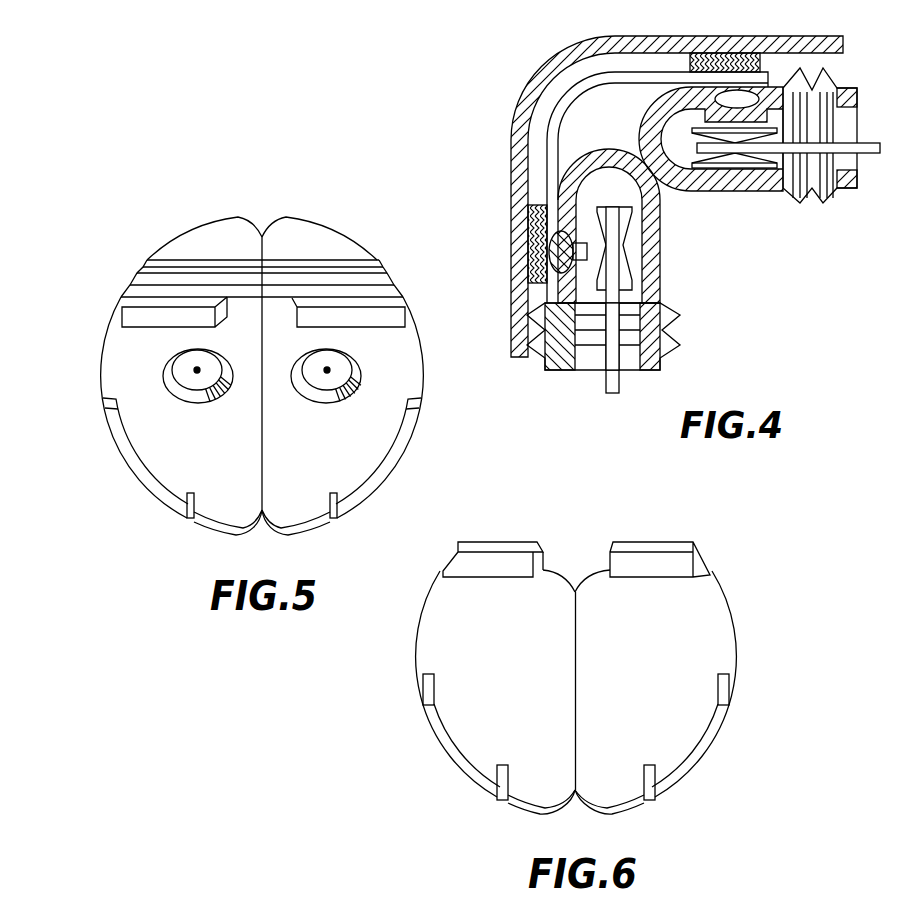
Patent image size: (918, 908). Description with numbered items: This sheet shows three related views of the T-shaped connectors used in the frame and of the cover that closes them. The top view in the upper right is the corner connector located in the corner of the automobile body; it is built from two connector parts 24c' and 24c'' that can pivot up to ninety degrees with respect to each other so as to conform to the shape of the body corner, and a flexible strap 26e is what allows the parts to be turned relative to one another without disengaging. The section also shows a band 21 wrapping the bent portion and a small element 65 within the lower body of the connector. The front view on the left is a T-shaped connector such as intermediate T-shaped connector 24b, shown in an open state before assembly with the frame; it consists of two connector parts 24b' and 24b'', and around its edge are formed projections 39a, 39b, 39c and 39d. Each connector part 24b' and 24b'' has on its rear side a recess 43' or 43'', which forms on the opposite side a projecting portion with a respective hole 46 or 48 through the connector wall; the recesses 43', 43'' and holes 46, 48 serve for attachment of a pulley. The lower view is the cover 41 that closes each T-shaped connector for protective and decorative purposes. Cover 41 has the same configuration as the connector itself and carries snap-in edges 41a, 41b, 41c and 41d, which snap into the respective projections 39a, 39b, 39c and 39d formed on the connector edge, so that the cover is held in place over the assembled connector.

In FIG. 4, the elbow housing band 21 is at (717, 43).
In FIG. 4, the flexible strap 26e is at (584, 95).
In FIG. 4, the ball element 65 is at (567, 247).
In FIG. 4, the connector part 24c' is at (627, 271).
In FIG. 4, the connector part 24c'' is at (759, 154).
In FIG. 5, the intermediate T-shaped connector 24b is at (264, 343).
In FIG. 5, the connector part 24b' is at (144, 416).
In FIG. 5, the connector part 24b'' is at (391, 416).
In FIG. 5, the projection 39b is at (130, 317).
In FIG. 5, the projection 39c is at (398, 318).
In FIG. 5, the hole 46 is at (196, 370).
In FIG. 5, the hole 48 is at (330, 370).
In FIG. 5, the recess 43' is at (143, 376).
In FIG. 5, the recess 43'' is at (385, 376).
In FIG. 5, the projection 39a is at (148, 480).
In FIG. 5, the projection 39d is at (380, 474).
In FIG. 6, the cover 41 is at (740, 606).
In FIG. 6, the snap-in edge 41b is at (473, 562).
In FIG. 6, the snap-in edge 41c is at (683, 563).
In FIG. 6, the snap-in edge 41a is at (462, 756).
In FIG. 6, the snap-in edge 41d is at (698, 755).